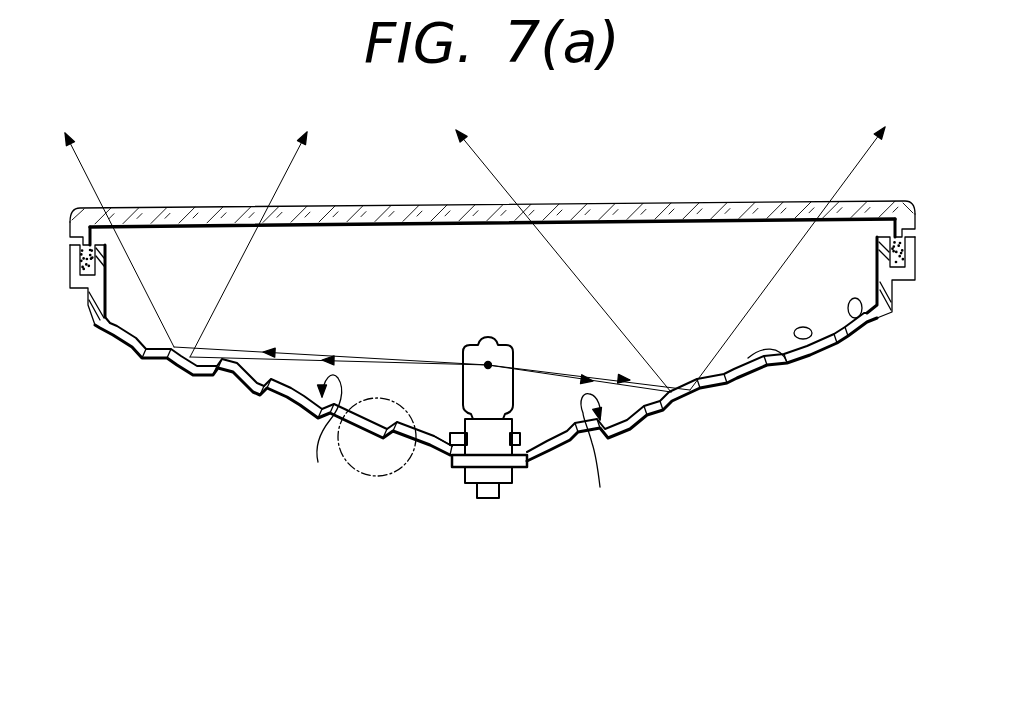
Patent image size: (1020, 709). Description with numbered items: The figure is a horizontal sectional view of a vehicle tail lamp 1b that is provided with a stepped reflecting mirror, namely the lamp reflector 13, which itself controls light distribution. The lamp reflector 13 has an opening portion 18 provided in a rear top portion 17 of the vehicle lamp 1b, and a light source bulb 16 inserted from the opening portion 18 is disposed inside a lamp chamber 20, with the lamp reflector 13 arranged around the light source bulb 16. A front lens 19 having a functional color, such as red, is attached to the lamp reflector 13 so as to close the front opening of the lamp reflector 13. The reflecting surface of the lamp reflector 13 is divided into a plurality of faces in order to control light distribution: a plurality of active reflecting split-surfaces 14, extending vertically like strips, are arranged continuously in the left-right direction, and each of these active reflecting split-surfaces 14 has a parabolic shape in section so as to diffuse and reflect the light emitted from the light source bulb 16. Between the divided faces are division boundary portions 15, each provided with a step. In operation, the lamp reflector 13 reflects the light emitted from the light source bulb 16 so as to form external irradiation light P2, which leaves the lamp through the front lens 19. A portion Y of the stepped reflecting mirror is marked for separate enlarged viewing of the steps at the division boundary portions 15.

The vehicle tail lamp 1b is at (410, 185).
The front lens 19 is at (637, 201).
The lamp chamber 20 is at (373, 297).
The external irradiation light P2 is at (240, 260).
The stepped reflecting mirror (lamp reflector) 13 is at (287, 402).
The active reflecting split-surfaces 14 is at (800, 333).
The division boundary portions 15 is at (456, 444).
The light source bulb 16 is at (450, 392).
The rear top portion 17 is at (428, 460).
The opening portion 18 is at (507, 470).
The portion Y is at (350, 472).